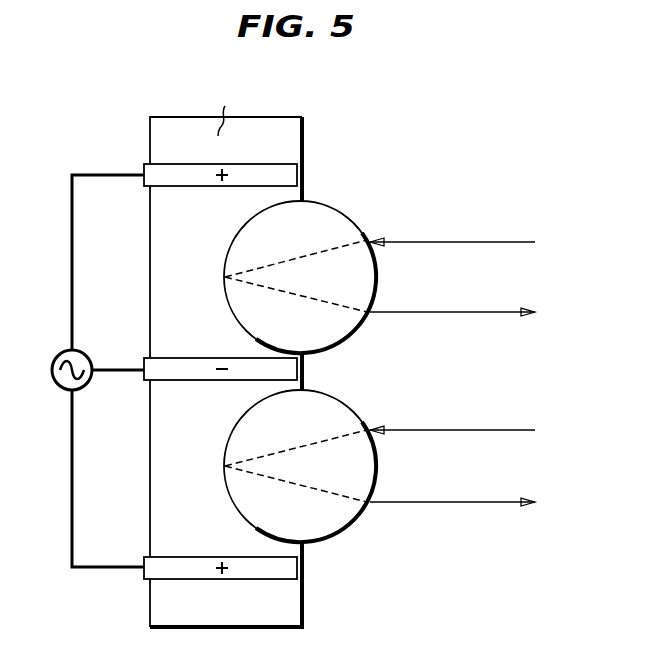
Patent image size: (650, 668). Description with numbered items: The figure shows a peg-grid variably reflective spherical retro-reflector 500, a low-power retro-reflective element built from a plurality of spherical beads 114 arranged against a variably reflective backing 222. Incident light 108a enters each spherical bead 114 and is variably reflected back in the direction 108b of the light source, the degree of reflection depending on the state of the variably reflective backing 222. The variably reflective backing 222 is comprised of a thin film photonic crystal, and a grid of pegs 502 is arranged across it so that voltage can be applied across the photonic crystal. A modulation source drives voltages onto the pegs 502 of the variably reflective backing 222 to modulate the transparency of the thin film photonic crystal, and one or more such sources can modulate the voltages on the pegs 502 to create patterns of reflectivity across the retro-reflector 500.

The peg-grid variably reflective spherical retro-reflector 500 is at (443, 148).
The variably reflective backing 222 is at (287, 614).
The pegs 502 is at (148, 190).
The spherical bead 114 is at (352, 214).
The incident light 108a is at (503, 242).
The direction of reflected light 108b is at (503, 312).